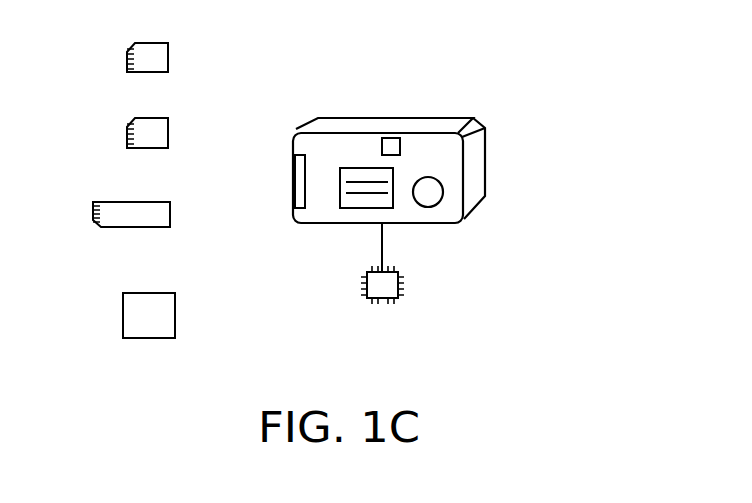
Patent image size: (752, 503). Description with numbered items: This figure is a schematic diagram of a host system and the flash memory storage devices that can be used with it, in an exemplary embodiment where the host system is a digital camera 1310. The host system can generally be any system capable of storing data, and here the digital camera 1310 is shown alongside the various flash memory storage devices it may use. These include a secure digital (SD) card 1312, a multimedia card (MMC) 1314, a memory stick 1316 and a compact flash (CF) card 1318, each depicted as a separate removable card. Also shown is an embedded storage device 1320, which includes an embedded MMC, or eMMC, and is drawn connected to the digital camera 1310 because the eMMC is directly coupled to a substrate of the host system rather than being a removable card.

The digital camera 1310 is at (488, 157).
The secure digital (SD) card 1312 is at (168, 50).
The multimedia card (MMC) 1314 is at (168, 124).
The memory stick 1316 is at (170, 212).
The compact flash (CF) card 1318 is at (175, 310).
The embedded storage device 1320 is at (404, 287).